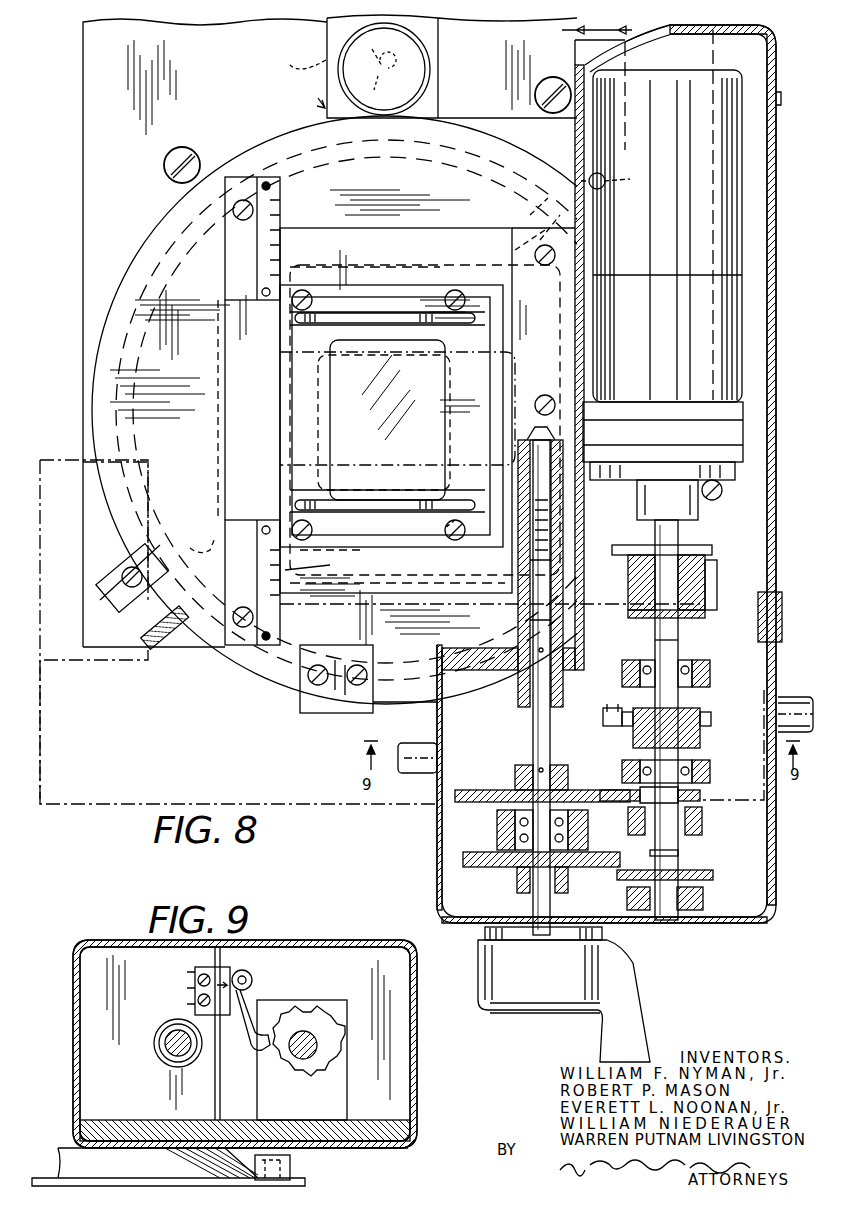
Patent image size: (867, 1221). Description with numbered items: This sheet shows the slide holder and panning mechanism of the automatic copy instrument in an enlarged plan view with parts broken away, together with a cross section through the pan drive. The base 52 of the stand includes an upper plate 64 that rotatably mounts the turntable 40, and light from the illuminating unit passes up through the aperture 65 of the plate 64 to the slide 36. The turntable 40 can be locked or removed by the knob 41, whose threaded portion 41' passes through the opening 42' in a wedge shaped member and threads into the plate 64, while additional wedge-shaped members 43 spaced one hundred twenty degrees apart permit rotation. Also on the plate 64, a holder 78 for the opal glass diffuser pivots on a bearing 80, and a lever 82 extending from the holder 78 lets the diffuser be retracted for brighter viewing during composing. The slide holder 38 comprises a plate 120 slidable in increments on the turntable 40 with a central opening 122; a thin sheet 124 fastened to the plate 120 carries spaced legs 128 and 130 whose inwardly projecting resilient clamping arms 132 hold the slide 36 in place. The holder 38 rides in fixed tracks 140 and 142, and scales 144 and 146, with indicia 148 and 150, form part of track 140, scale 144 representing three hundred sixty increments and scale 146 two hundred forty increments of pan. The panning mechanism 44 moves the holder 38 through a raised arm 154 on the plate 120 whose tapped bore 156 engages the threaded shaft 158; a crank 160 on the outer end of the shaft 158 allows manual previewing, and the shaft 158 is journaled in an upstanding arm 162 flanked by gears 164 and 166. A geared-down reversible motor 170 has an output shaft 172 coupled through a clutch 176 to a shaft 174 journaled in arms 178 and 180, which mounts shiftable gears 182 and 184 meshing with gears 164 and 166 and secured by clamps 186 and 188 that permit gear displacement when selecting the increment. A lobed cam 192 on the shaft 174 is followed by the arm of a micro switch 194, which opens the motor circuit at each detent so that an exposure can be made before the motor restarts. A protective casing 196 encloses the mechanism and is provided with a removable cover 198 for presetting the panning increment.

In FIG. 8, the slide 36 is at (208, 440).
In FIG. 8, the slide holder 38 is at (500, 198).
In FIG. 8, the turntable 40 is at (112, 522).
In FIG. 9, the turntable 40 is at (62, 1148).
In FIG. 8, the knob 41 is at (406, 69).
In FIG. 8, the threaded portion 41' is at (371, 48).
In FIG. 8, the opening 42' is at (380, 80).
In FIG. 8, the wedge-shaped members 43 is at (142, 597).
In FIG. 9, the wedge-shaped members 43 is at (290, 1162).
In FIG. 8, the panning mechanism 44 is at (333, 806).
In FIG. 9, the panning mechanism 44 is at (318, 935).
In FIG. 8, the base 52 is at (83, 202).
In FIG. 8, the upper plate 64 is at (83, 285).
In FIG. 9, the upper plate 64 is at (305, 1182).
In FIG. 8, the aperture 65 is at (430, 585).
In FIG. 8, the holder 78 is at (191, 547).
In FIG. 8, the bearing 80 is at (616, 181).
In FIG. 8, the lever 82 is at (575, 50).
In FIG. 8, the plate 120 is at (375, 236).
In FIG. 8, the central opening 122 is at (385, 495).
In FIG. 8, the thin sheet 124 is at (503, 303).
In FIG. 8, the leg 128 is at (387, 305).
In FIG. 8, the leg 130 is at (330, 565).
In FIG. 8, the clamping arms 132 is at (345, 324).
In FIG. 8, the track 140 is at (280, 352).
In FIG. 8, the track 142 is at (548, 205).
In FIG. 8, the scale 144 is at (280, 208).
In FIG. 8, the scale 146 is at (280, 625).
In FIG. 8, the indicia 148 is at (365, 255).
In FIG. 8, the indicia 150 is at (307, 567).
In FIG. 8, the raised arm 154 is at (472, 529).
In FIG. 8, the tapped bore 156 is at (518, 570).
In FIG. 8, the threaded shaft 158 is at (533, 612).
In FIG. 9, the threaded shaft 158 is at (165, 1043).
In FIG. 8, the crank 160 is at (652, 1015).
In FIG. 8, the upstanding arm 162 is at (497, 828).
In FIG. 8, the gear 164 is at (492, 778).
In FIG. 8, the gear 166 is at (470, 870).
In FIG. 8, the reversible motor 170 is at (742, 248).
In FIG. 8, the motor output shaft 172 is at (637, 510).
In FIG. 8, the shaft 174 is at (660, 692).
In FIG. 9, the shaft 174 is at (310, 1040).
In FIG. 8, the clutch 176 is at (628, 615).
In FIG. 8, the arm 178 is at (710, 675).
In FIG. 9, the arm 178 is at (340, 1110).
In FIG. 8, the arm 180 is at (710, 770).
In FIG. 8, the shiftable gear 182 is at (700, 796).
In FIG. 8, the shiftable gear 184 is at (713, 875).
In FIG. 8, the clamp 186 is at (702, 825).
In FIG. 8, the clamp 188 is at (703, 898).
In FIG. 8, the lobed cam 192 is at (711, 722).
In FIG. 9, the lobed cam 192 is at (332, 1046).
In FIG. 8, the micro switch 194 is at (603, 718).
In FIG. 9, the micro switch 194 is at (252, 978).
In FIG. 8, the protective casing 196 is at (778, 322).
In FIG. 8, the removable cover 198 is at (437, 883).
In FIG. 9, the removable cover 198 is at (417, 1090).